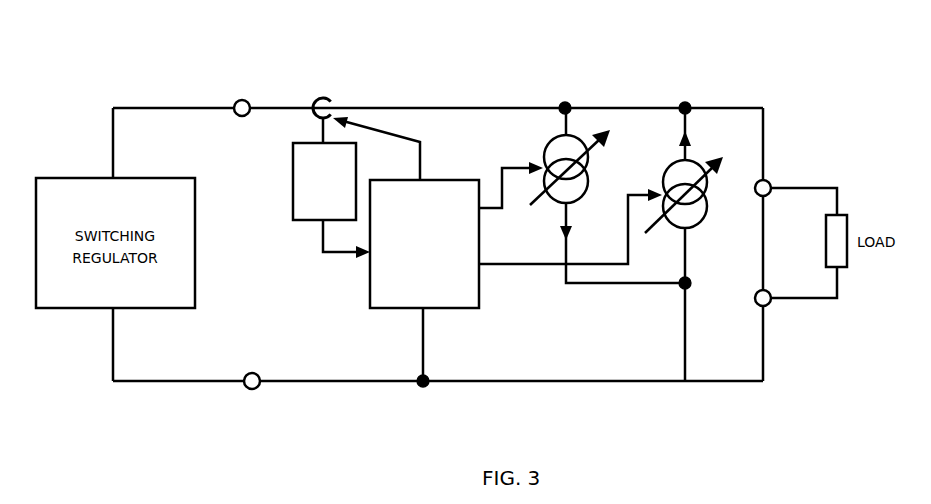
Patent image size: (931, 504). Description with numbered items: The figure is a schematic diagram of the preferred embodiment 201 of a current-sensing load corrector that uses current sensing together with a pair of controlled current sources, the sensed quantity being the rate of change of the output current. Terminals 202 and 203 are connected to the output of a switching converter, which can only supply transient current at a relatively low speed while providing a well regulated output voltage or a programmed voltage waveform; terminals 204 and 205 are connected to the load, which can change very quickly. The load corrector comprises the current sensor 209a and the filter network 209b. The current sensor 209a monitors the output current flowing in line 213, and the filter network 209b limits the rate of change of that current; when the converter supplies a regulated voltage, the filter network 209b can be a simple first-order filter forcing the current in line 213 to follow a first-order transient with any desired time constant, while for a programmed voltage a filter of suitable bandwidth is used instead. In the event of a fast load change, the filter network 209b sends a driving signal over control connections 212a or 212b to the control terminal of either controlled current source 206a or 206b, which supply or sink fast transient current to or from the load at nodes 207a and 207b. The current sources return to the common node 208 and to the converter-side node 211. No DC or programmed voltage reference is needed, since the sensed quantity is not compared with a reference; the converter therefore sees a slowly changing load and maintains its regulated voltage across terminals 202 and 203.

The current-sensing load corrector 201 is at (507, 80).
The converter terminal 202 is at (242, 95).
The converter terminal 203 is at (250, 395).
The load terminal 204 is at (784, 178).
The load terminal 205 is at (784, 307).
The controlled current source 206a is at (607, 195).
The controlled current source 206b is at (698, 244).
The first node 207a is at (572, 94).
The second node 207b is at (689, 94).
The common node 208 is at (685, 349).
The current sensor 209a is at (295, 200).
The filter network 209b is at (406, 212).
The ground node 211 is at (423, 364).
The first control line 212a is at (511, 200).
The second control line 212b is at (570, 240).
The output current line 213 is at (346, 113).